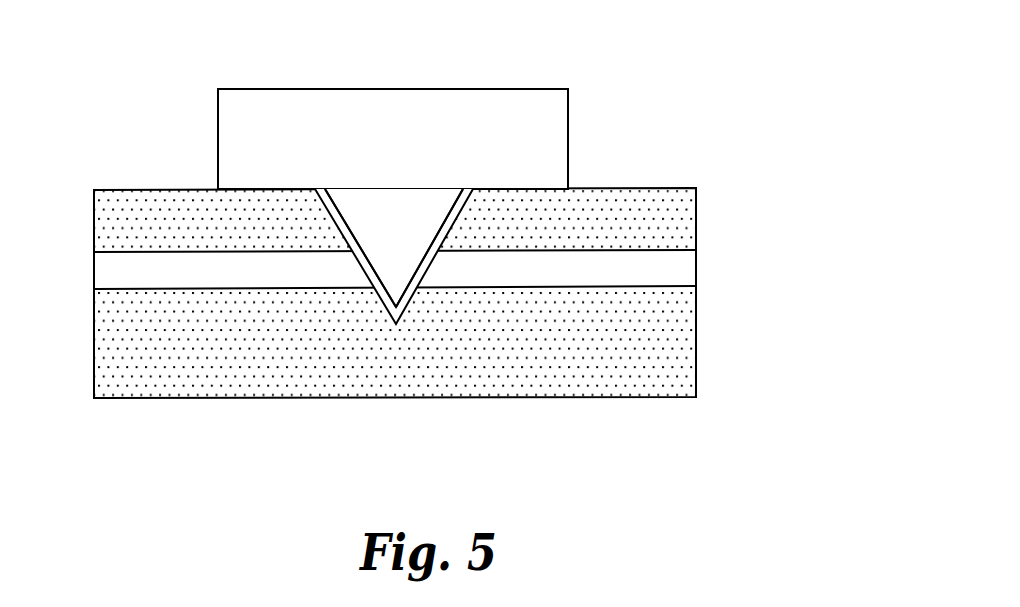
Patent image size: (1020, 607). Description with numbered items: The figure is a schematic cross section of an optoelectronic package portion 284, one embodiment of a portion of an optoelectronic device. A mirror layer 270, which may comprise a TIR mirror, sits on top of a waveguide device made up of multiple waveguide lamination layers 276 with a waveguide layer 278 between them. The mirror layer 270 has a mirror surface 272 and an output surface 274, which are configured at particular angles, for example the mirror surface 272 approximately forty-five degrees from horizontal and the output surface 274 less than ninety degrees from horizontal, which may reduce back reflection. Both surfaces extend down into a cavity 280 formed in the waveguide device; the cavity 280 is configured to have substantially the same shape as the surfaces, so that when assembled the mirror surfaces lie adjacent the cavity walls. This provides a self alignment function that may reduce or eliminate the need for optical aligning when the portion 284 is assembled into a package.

The optoelectronic package portion 284 is at (143, 82).
The mirror layer 270 is at (568, 137).
The waveguide lamination layers 276 is at (696, 217).
The waveguide layer 278 is at (696, 270).
The mirror surface 272 is at (387, 295).
The output surface 274 is at (425, 260).
The cavity 280 is at (362, 257).